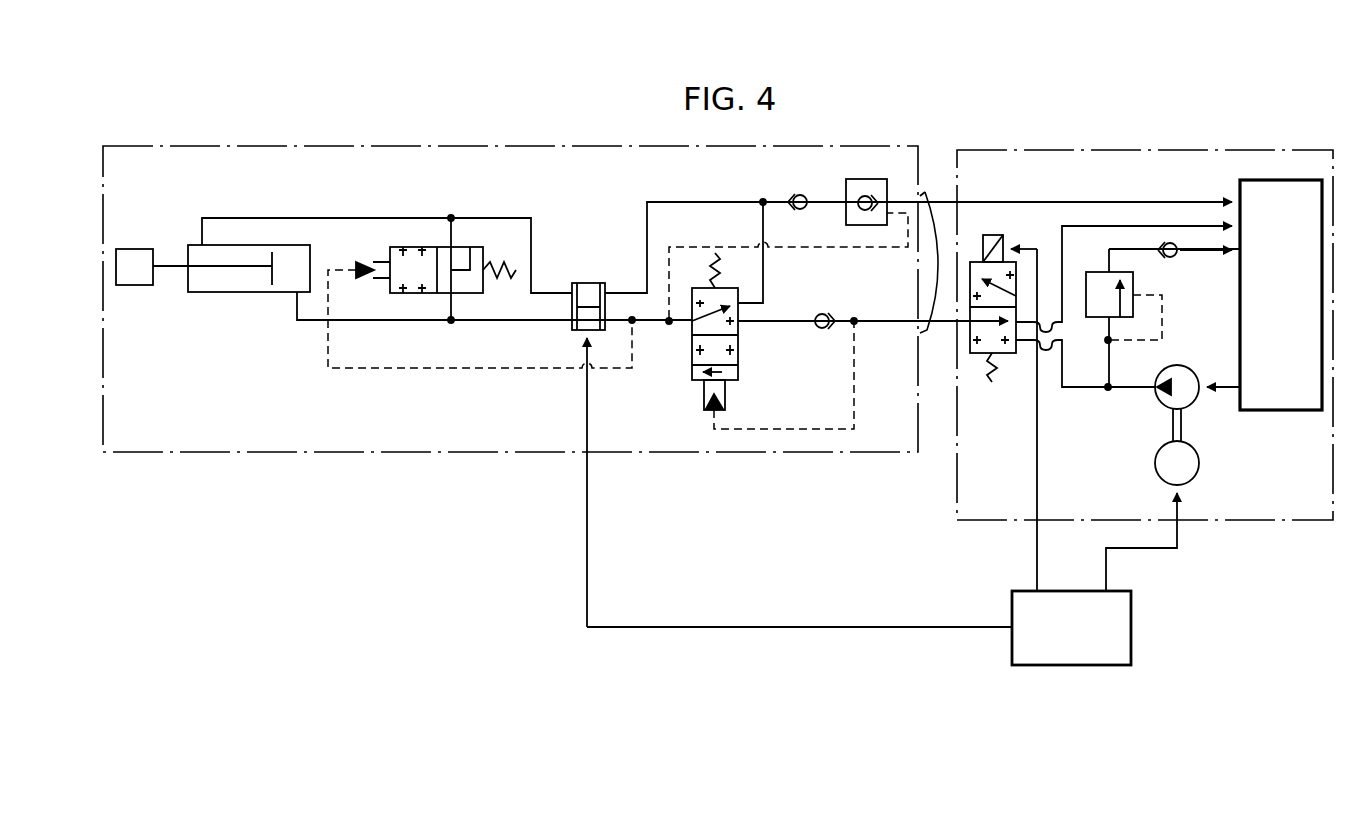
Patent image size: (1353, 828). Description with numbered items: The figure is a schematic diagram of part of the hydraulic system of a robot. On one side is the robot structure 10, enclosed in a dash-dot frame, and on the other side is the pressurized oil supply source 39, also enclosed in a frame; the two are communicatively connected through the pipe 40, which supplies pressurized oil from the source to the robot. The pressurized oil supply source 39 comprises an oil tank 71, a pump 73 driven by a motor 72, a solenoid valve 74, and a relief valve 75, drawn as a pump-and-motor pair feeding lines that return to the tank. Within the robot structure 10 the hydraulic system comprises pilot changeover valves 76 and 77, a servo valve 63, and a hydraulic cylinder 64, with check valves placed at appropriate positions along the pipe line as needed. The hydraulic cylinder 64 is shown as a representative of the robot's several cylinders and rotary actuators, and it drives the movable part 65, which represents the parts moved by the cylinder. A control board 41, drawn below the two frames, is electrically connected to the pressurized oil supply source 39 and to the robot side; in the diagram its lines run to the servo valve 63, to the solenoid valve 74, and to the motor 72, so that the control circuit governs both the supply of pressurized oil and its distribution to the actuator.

The robot structure 10 is at (570, 146).
The pressurized oil supply source 39 is at (1110, 150).
The supply pipe 40 is at (936, 192).
The control board 41 is at (1133, 600).
The servo valve 63 is at (589, 283).
The hydraulic cylinder 64 is at (235, 293).
The movable part 65 is at (130, 248).
The oil tank 71 is at (1240, 314).
The motor 72 is at (1200, 452).
The pump 73 is at (1160, 403).
The solenoid valve 74 is at (1012, 356).
The relief valve 75 is at (1135, 281).
The pilot changeover valve 76 is at (740, 360).
The pilot changeover valve 77 is at (398, 247).